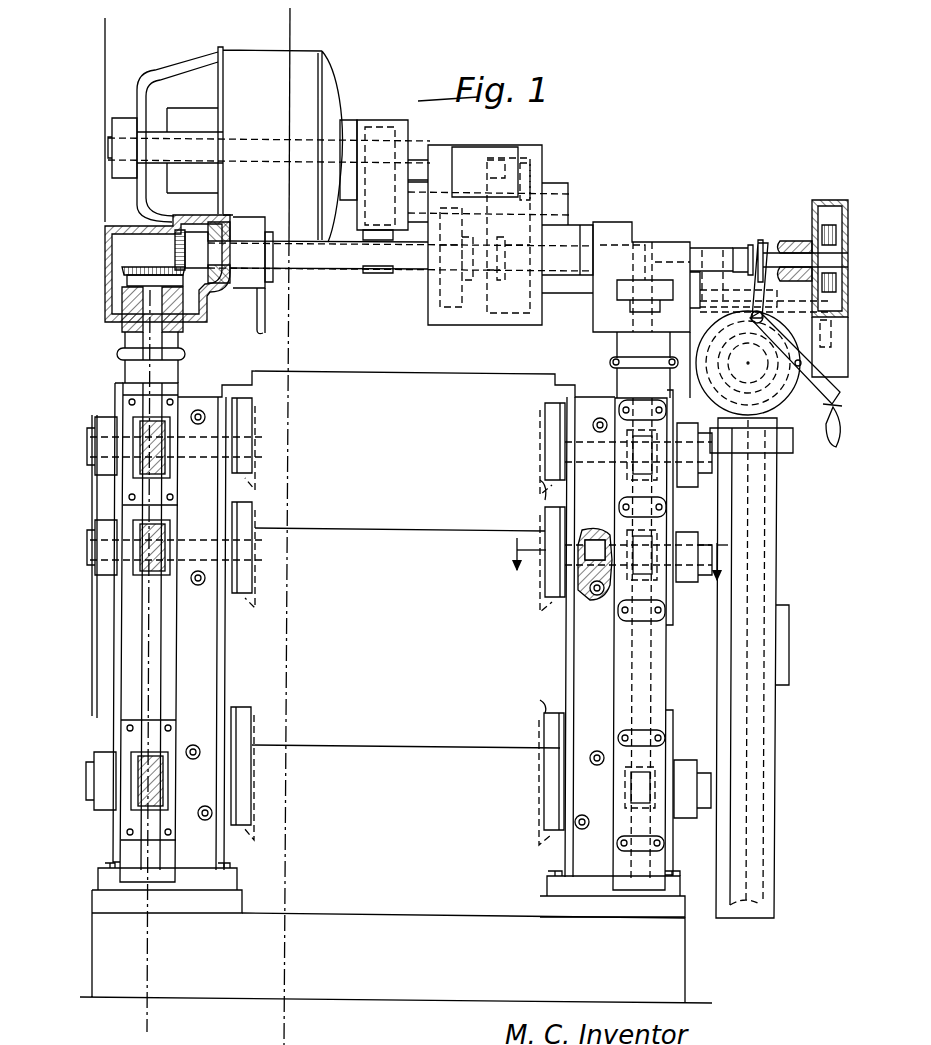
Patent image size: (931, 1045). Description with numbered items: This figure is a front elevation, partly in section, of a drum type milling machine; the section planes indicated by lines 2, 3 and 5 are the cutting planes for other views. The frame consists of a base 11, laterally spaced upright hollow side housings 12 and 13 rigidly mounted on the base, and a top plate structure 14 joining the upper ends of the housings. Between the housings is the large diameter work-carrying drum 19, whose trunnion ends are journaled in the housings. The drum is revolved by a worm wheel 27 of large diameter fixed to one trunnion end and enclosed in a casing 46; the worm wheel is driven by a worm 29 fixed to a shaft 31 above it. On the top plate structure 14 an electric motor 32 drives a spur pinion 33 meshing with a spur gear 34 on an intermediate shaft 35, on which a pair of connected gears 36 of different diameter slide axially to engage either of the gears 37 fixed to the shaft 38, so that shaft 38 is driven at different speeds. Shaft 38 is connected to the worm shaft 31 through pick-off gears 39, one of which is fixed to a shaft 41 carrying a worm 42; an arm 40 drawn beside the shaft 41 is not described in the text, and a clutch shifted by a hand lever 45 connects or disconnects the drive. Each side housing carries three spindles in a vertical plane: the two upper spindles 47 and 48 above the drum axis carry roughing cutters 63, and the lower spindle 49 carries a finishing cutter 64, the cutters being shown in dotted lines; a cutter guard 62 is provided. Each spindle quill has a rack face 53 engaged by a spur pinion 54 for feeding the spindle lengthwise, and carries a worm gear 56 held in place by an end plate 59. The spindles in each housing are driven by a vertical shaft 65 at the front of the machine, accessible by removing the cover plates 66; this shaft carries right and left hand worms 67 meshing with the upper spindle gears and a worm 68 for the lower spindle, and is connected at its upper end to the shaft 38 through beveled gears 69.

The section line 2- 2 is at (268, 22).
The section line 3- 3 is at (132, 22).
The section line 5- 5 is at (615, 559).
The base 11 is at (470, 984).
The side housing 12 is at (226, 662).
The side housing 13 is at (570, 658).
The top plate structure 14 is at (395, 392).
The drum 19 is at (400, 551).
The worm wheel 27 is at (777, 558).
The worm 29 is at (823, 403).
The worm shaft 31 is at (740, 354).
The electric motor 32 is at (240, 58).
The spur pinion 33 is at (380, 126).
The spur gear 34 is at (364, 232).
The intermediate shaft 35 is at (552, 193).
The connected gears 36 is at (522, 162).
The gears 37 is at (460, 300).
The shaft 38 is at (314, 262).
The pick-off gears 39 is at (833, 205).
The arm 40 is at (766, 243).
The shaft 41 is at (724, 250).
The worm 42 is at (740, 242).
The hand lever 45 is at (830, 449).
The casing 46 is at (778, 742).
The upper spindle 47 is at (204, 455).
The upper spindle 48 is at (200, 530).
The lower spindle 49 is at (197, 748).
The rack face 53 is at (582, 594).
The spur pinion 54 is at (597, 598).
The worm gear 56 is at (160, 400).
The end plate 59 is at (116, 504).
The cutter guard 62 is at (548, 500).
The roughing cutter 63 is at (252, 518).
The finishing cutter 64 is at (252, 790).
The vertical shaft 65 is at (150, 655).
The cover plate 66 is at (660, 516).
The worm 67 is at (140, 435).
The worm 68 is at (165, 808).
The beveled gears 69 is at (160, 250).